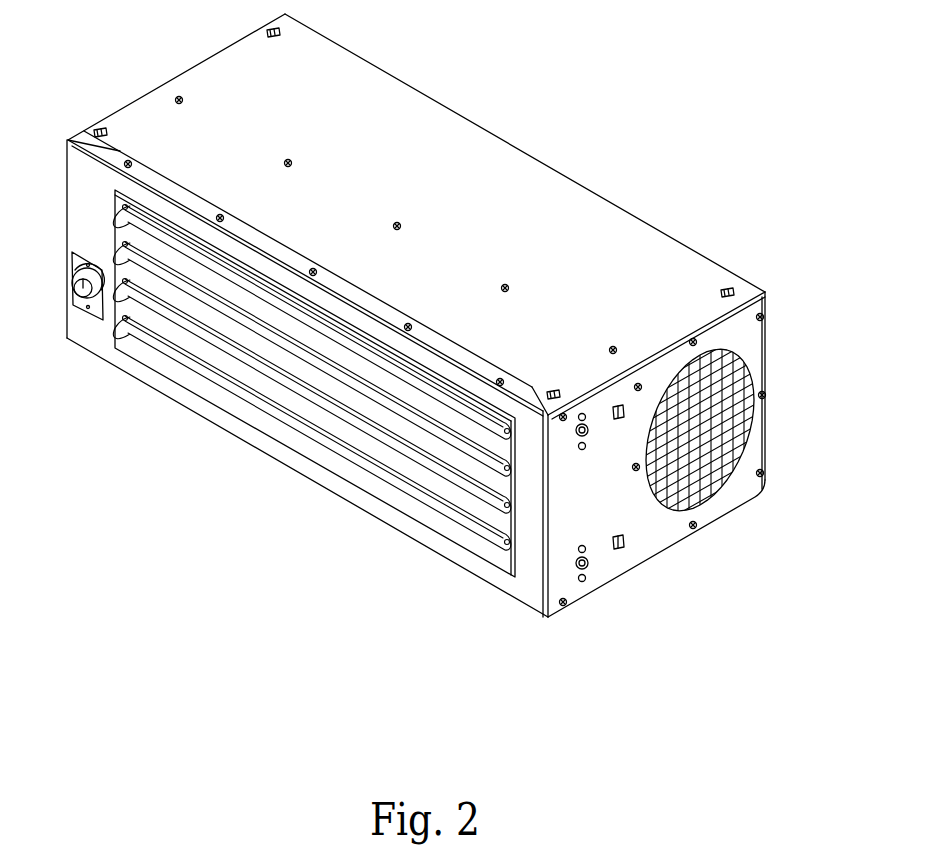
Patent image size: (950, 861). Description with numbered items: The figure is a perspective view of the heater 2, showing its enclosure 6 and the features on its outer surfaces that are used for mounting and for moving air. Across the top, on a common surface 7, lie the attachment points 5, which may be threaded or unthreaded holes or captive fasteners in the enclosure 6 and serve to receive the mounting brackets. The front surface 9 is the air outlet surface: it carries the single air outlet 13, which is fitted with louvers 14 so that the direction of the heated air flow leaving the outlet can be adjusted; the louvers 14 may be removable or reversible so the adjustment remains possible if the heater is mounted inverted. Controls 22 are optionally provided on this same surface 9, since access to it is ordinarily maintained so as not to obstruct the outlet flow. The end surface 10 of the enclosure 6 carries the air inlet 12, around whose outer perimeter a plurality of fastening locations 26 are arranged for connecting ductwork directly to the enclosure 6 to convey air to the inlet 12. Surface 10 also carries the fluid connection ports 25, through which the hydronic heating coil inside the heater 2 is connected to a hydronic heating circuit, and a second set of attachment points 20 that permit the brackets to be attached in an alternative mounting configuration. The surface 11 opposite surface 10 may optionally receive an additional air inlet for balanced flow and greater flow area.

The heater 2 is at (524, 78).
The attachment points 5 is at (280, 36).
The enclosure 6 is at (619, 208).
The common surface 7 is at (489, 217).
The surface 9 is at (532, 595).
The surface 10 is at (658, 532).
The surface 11 is at (150, 92).
The air inlet 12 is at (703, 482).
The air outlet 13 is at (210, 368).
The louvers 14 is at (415, 397).
The second set of attachment points 20 is at (612, 414).
The controls 22 is at (80, 288).
The fluid connection ports 25 is at (578, 431).
The fastening locations 26 is at (639, 384).